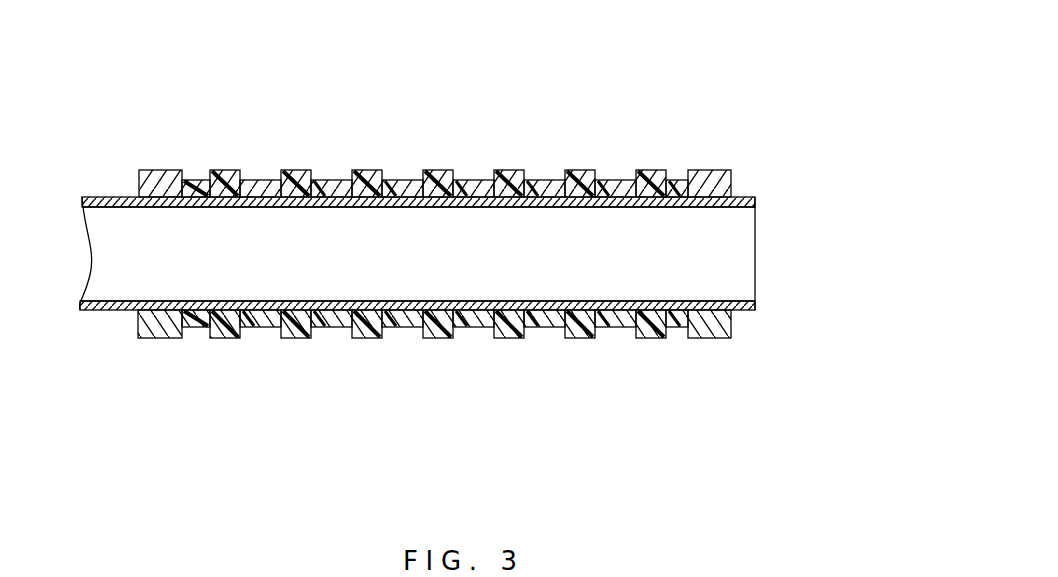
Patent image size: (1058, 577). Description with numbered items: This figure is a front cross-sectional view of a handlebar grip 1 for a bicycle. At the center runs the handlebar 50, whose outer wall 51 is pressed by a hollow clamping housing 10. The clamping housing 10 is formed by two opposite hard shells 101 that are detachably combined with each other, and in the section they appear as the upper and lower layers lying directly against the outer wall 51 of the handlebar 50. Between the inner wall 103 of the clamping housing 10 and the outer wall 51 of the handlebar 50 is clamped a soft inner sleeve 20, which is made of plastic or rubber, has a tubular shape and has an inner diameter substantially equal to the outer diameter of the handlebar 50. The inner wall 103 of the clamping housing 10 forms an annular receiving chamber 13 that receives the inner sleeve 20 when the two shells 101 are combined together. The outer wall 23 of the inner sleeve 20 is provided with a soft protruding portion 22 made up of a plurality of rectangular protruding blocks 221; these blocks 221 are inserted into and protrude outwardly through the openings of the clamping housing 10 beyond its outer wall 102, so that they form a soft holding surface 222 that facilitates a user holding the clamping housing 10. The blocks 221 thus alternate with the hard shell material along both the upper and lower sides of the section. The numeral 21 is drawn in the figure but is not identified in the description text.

The handlebar grip 1 is at (648, 126).
The clamping housing 10 is at (498, 260).
The hard shell 101 is at (732, 193).
The outer wall of the clamping housing 102 is at (265, 176).
The inner wall of the clamping housing 103 is at (602, 180).
The annular receiving chamber 13 is at (667, 178).
The inner sleeve 20 is at (461, 143).
The conductive connecting portion 21 is at (176, 218).
The protruding portion 22 is at (413, 399).
The protruding block 221 is at (493, 433).
The soft holding surface 222 is at (222, 340).
The outer wall of the inner sleeve 23 is at (467, 176).
The handlebar 50 is at (106, 186).
The outer wall of the handlebar 51 is at (122, 197).